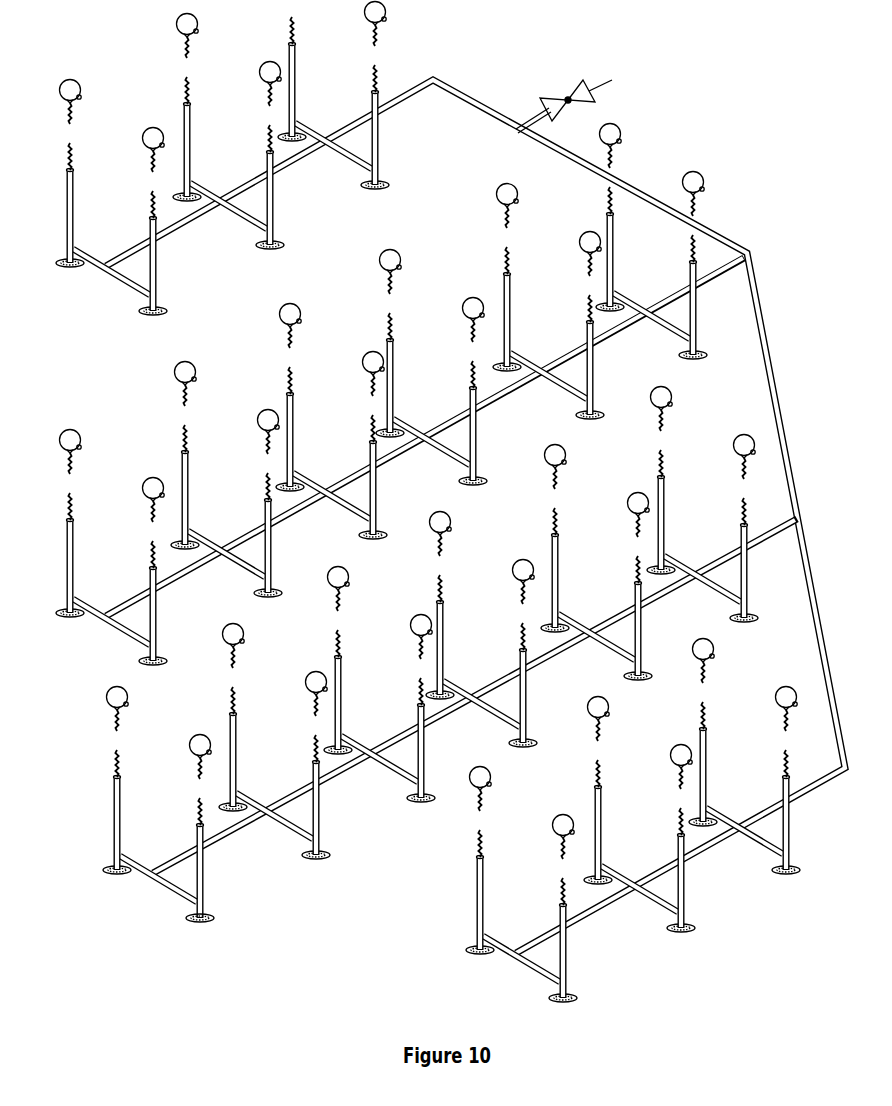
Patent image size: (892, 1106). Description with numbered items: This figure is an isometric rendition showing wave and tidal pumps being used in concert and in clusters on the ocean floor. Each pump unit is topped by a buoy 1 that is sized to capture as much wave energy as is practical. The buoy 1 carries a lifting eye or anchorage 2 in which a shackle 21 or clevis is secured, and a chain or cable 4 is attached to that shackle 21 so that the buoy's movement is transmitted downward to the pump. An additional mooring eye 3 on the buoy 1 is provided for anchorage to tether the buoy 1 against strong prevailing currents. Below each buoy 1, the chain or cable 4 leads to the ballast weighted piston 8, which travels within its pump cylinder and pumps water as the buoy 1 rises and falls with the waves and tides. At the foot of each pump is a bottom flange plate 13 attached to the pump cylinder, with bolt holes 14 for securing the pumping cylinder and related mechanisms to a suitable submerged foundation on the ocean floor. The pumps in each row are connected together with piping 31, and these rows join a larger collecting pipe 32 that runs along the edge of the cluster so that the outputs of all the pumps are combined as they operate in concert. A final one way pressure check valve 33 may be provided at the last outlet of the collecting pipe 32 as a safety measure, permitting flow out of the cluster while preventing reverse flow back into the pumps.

The buoy 1 is at (109, 708).
The lifting eye or anchorage 2 is at (110, 707).
The mooring eye 3 is at (129, 704).
The shackle 21 is at (121, 712).
The chain or cable 4 is at (113, 770).
The ballast weighted piston 8 is at (112, 812).
The bottom flange plate 13 is at (109, 875).
The bolt holes 14 is at (186, 918).
The piping 31 is at (143, 865).
The main gas pipe 32 is at (620, 178).
The one way pressure check valve 33 is at (592, 80).